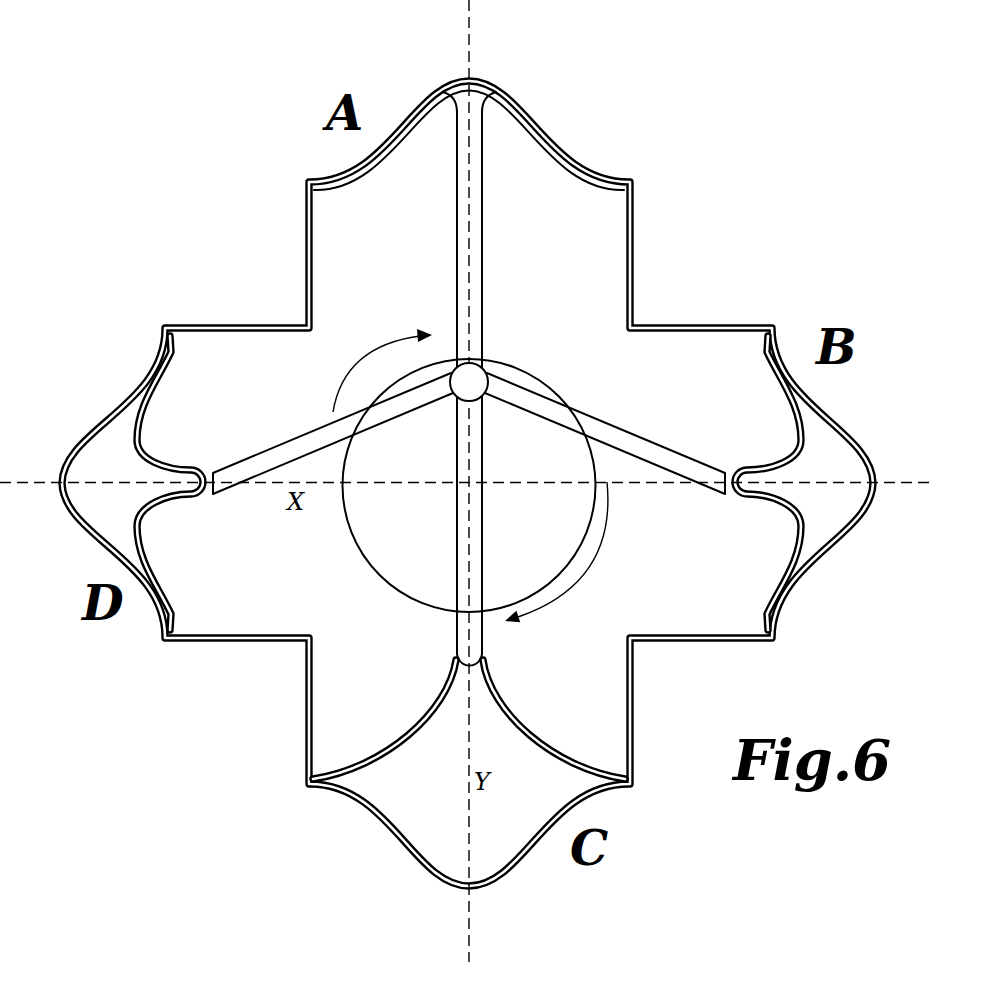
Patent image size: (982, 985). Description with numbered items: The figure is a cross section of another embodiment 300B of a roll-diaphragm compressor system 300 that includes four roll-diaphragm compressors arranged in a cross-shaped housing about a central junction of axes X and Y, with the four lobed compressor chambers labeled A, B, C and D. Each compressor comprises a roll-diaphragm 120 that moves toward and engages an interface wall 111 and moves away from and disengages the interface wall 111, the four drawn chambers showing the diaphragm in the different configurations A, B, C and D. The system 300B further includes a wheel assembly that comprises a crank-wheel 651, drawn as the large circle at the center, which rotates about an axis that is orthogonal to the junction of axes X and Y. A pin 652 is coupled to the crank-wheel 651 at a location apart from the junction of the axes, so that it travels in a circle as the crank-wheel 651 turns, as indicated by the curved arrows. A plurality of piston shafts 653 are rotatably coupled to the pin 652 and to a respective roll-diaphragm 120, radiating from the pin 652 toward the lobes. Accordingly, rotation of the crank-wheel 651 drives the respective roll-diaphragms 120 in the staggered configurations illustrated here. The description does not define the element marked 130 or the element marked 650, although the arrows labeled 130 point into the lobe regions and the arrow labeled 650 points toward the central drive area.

The roll-diaphragm compressor system 300 is at (190, 155).
The embodiment of the roll-diaphragm compressor system 300B is at (172, 198).
The interface wall 111 is at (482, 82).
The roll-diaphragm 120 is at (571, 182).
The lobe cavity 130 is at (834, 437).
The rotating member 650 is at (508, 332).
The crank-wheel 651 is at (343, 533).
The pin 652 is at (447, 387).
The piston shaft 653 is at (455, 292).